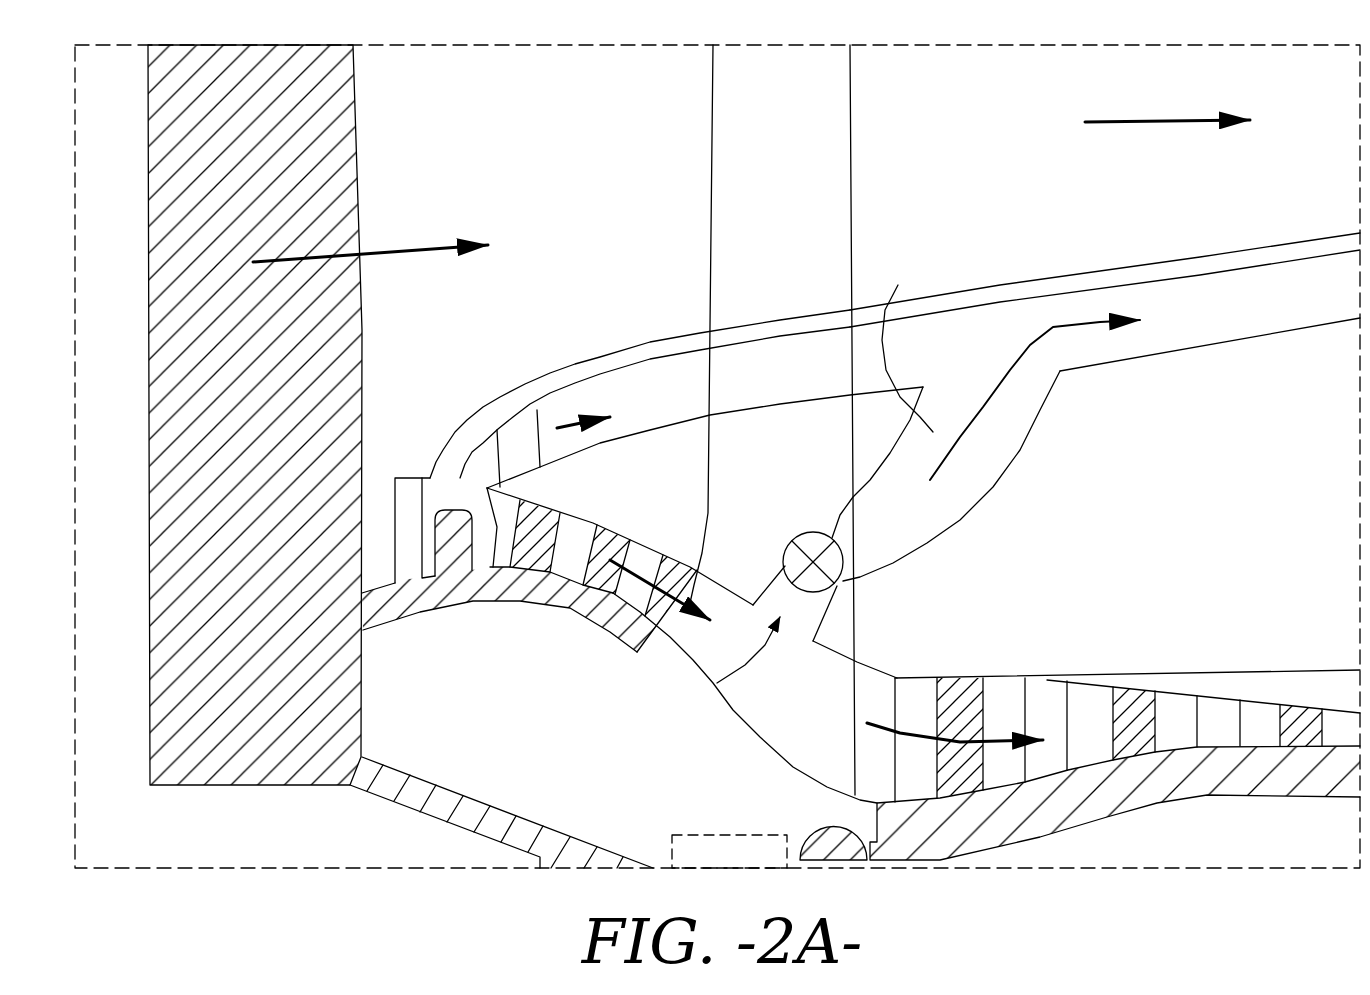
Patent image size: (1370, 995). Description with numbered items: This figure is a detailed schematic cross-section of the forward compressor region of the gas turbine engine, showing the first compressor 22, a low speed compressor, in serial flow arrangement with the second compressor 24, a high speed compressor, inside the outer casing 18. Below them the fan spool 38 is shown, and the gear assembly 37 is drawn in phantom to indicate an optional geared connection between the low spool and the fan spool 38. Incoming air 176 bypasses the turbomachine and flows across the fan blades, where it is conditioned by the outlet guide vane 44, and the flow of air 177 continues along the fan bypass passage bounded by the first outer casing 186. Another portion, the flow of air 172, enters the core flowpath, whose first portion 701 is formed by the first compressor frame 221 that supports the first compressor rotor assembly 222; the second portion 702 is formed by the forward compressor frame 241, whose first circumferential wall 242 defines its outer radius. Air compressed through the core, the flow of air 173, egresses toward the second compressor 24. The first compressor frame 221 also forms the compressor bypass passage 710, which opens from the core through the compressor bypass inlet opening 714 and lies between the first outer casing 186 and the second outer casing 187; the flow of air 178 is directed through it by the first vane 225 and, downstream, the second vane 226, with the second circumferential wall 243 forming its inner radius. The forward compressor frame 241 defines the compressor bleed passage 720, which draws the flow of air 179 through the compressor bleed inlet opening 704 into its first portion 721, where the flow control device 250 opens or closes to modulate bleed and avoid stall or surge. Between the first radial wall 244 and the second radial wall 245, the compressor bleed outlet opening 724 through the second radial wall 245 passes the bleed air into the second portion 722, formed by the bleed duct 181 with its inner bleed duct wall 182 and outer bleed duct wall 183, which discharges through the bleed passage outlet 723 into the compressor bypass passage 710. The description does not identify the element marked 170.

The outer casing 18 is at (1217, 407).
The first compressor 22 is at (529, 596).
The second compressor 24 is at (1080, 803).
The gear assembly 37 is at (716, 826).
The fan spool 38 is at (400, 456).
The outlet guide vane 44 is at (880, 420).
The outer band 170 is at (1105, 258).
The flow of air 172 is at (620, 554).
The flow of air 173 is at (1113, 717).
The flow of air 176 is at (370, 221).
The flow of air 177 is at (1157, 99).
The flow of air 178 is at (510, 398).
The flow of air 179 is at (1035, 347).
The bleed duct 181 is at (1055, 521).
The inner bleed duct wall 182 is at (989, 476).
The outer bleed duct wall 183 is at (906, 340).
The first outer casing 186 is at (1105, 253).
The second outer casing 187 is at (1210, 354).
The first compressor frame 221 is at (640, 386).
The first compressor rotor assembly 222 is at (458, 585).
The first vane 225 is at (655, 402).
The second vane 226 is at (602, 386).
The forward compressor frame 241 is at (667, 328).
The first circumferential wall 242 is at (795, 644).
The second circumferential wall 243 is at (775, 333).
The first radial wall 244 is at (705, 437).
The second radial wall 245 is at (888, 645).
The flow control device 250 is at (784, 538).
The first portion of the core flowpath 701 is at (388, 516).
The second portion of the core flowpath 702 is at (745, 698).
The compressor bleed inlet opening 704 is at (695, 662).
The compressor bypass passage 710 is at (1188, 249).
The compressor bypass inlet opening 714 is at (413, 436).
The compressor bleed passage 720 is at (1059, 463).
The first portion of the compressor bleed passage 721 is at (797, 488).
The second portion of the compressor bleed passage 722 is at (971, 544).
The bleed passage outlet 723 is at (967, 296).
The compressor bleed outlet opening 724 is at (925, 578).